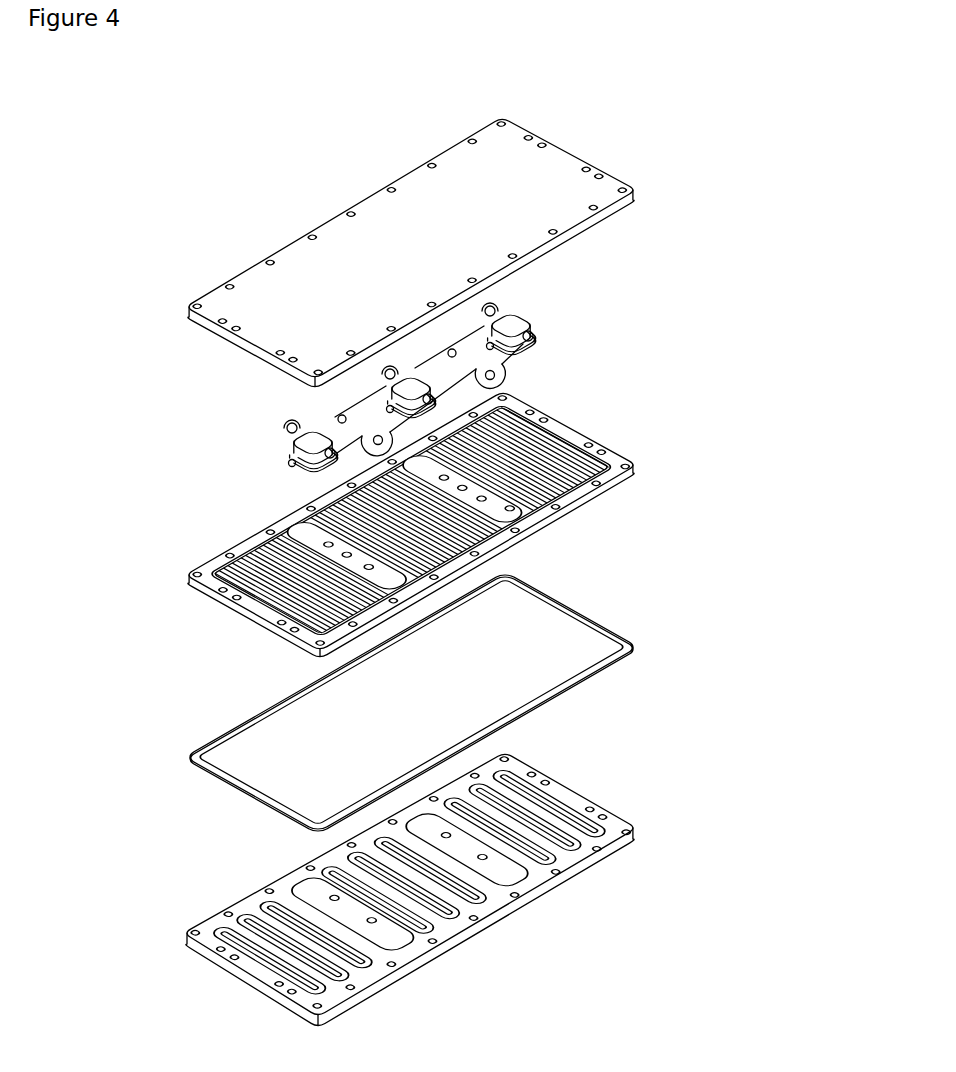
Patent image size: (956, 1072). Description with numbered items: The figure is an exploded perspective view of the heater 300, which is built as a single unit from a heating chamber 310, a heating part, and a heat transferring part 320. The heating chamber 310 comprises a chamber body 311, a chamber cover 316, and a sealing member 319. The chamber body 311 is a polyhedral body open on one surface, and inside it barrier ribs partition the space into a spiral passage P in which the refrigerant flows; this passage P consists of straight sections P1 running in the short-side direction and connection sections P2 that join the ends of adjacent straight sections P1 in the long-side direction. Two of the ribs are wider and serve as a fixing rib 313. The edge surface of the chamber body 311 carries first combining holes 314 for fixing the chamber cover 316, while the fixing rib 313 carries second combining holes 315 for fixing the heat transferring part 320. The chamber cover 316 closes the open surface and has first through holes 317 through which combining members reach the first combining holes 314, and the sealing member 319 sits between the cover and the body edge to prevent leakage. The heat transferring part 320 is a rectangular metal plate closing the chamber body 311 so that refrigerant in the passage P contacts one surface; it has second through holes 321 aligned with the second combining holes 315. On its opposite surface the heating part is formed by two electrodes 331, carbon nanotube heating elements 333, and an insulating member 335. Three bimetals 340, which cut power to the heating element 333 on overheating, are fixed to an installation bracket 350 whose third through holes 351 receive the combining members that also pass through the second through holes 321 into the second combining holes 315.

The heater 300 is at (245, 166).
The heating chamber 310 is at (86, 443).
The chamber body 311 is at (220, 963).
The fixing rib 313 is at (353, 913).
The first combining hole 314 is at (228, 914).
The second combining hole 315 is at (482, 856).
The chamber cover 316 is at (222, 333).
The first through hole 317 is at (308, 229).
The sealing member 319 is at (605, 623).
The heat transferring part 320 is at (242, 547).
The second through hole 321 is at (509, 508).
The electrode 331 is at (346, 556).
The carbon nanotube heating element 333 is at (411, 520).
The insulating member 335 is at (411, 521).
The bimetal 340 is at (522, 318).
The installation bracket 350 is at (357, 409).
The third through hole 351 is at (505, 359).
The passage P is at (409, 882).
The straight section P1 is at (549, 803).
The connection section P2 is at (549, 803).